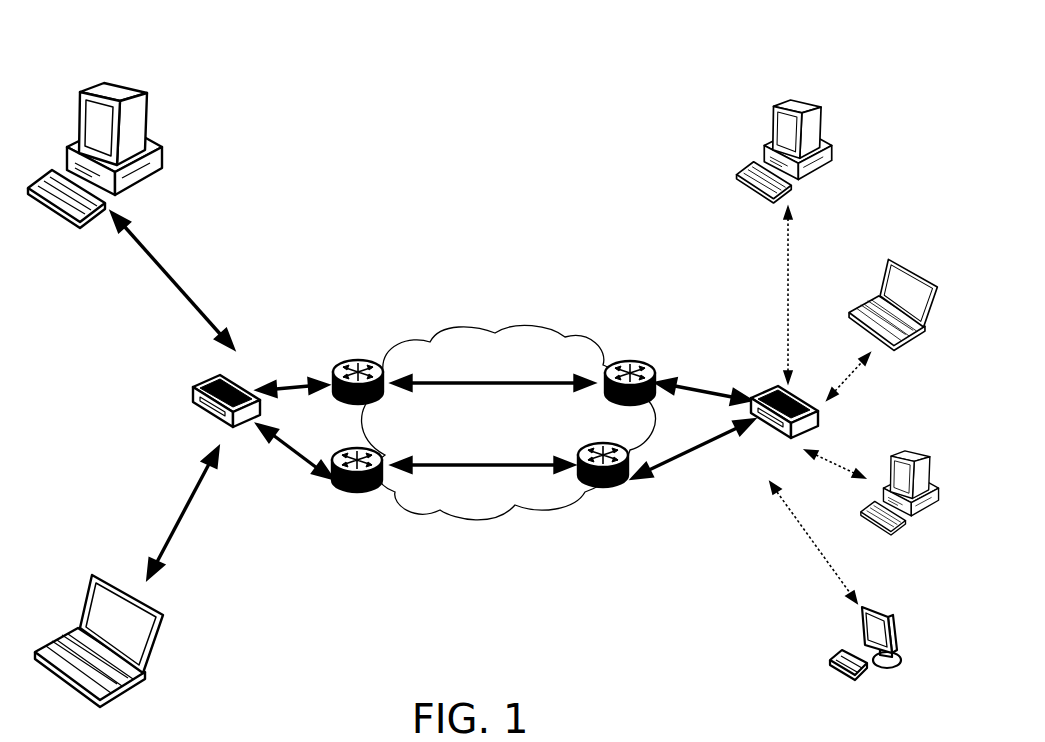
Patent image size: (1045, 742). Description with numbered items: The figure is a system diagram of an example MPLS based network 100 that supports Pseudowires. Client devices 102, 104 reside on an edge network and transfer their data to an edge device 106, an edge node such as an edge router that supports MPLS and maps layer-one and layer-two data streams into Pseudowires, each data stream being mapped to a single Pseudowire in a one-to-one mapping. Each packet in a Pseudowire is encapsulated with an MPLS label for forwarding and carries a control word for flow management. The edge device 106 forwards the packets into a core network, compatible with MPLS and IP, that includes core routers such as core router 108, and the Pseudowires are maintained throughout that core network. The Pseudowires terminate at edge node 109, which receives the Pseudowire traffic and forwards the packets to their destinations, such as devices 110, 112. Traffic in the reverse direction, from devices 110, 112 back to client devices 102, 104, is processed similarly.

The MPLS based network 100 is at (546, 125).
The client device 102 is at (147, 98).
The client device 104 is at (165, 638).
The edge device 106 is at (227, 370).
The core router 108 is at (368, 347).
The edge node 109 is at (787, 383).
The device 110 is at (820, 103).
The device 112 is at (863, 280).